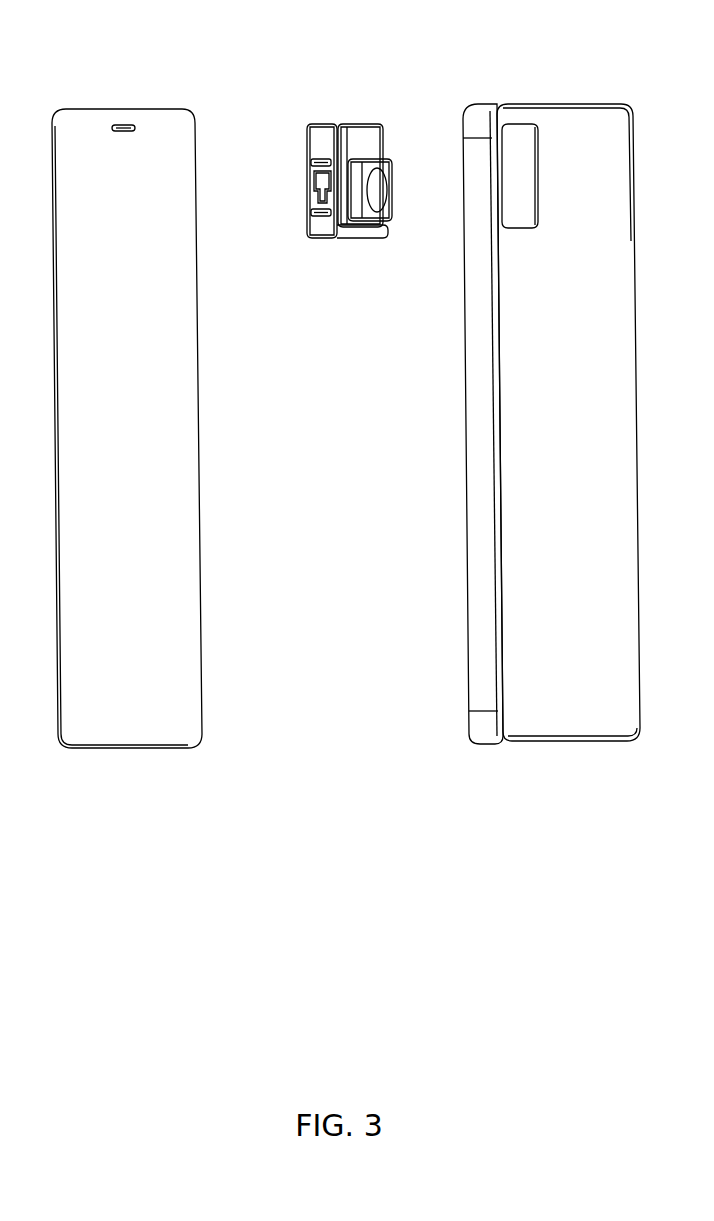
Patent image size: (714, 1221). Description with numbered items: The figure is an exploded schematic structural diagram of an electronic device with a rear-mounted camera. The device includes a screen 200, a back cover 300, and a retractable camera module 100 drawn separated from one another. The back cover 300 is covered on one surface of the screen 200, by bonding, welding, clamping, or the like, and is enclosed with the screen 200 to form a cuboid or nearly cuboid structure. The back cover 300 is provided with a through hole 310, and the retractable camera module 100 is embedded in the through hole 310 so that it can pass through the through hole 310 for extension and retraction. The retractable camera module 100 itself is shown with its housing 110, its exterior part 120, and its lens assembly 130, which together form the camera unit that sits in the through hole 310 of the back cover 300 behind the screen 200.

The retractable camera module 100 is at (405, 36).
The housing 110 is at (322, 138).
The exterior part 120 is at (362, 138).
The lens assembly 130 is at (380, 180).
The screen 200 is at (83, 144).
The back cover 300 is at (575, 145).
The through hole 310 is at (520, 147).